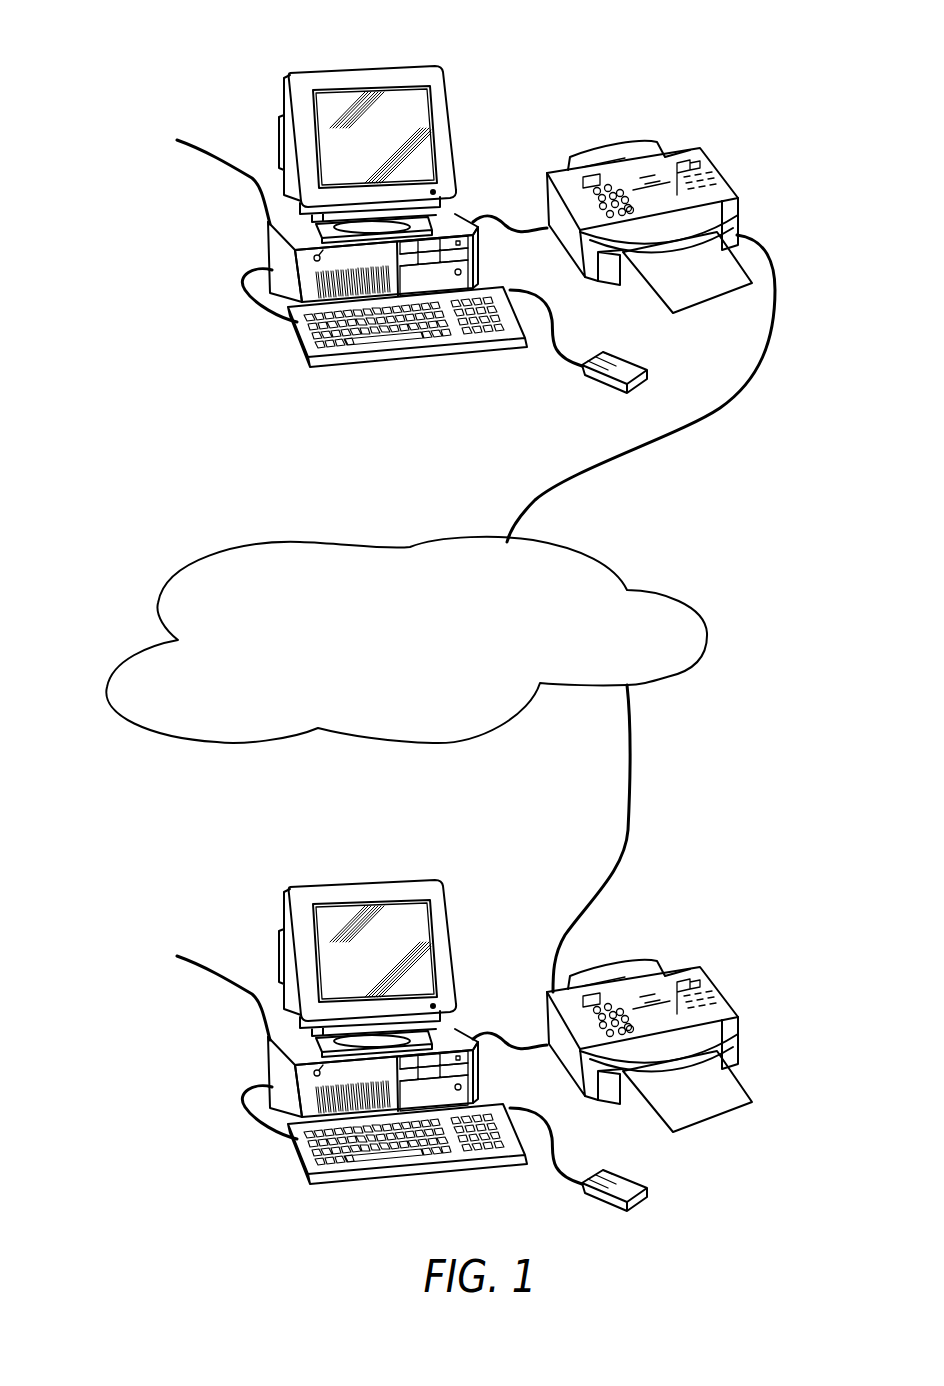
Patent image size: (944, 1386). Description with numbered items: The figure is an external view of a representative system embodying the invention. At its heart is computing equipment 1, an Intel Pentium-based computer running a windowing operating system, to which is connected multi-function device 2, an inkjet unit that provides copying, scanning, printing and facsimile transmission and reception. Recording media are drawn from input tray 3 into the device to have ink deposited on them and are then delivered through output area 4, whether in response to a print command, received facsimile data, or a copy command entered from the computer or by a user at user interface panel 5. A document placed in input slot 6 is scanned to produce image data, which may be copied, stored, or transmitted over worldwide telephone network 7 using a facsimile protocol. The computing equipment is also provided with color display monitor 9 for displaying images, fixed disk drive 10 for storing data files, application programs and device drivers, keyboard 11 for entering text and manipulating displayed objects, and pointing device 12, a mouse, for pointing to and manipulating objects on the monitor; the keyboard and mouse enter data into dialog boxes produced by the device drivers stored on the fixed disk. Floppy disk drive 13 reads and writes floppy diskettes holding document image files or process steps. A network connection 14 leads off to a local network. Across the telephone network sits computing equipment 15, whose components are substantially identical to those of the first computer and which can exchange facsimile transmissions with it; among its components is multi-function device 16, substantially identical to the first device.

The computing equipment 1 is at (515, 84).
The multi-function device 2 is at (663, 194).
The input tray 3 is at (593, 143).
The output area 4 is at (623, 272).
The user interface panel 5 is at (627, 190).
The input slot 6 is at (738, 205).
The worldwide telephone network 7 is at (650, 592).
The color display monitor 9 is at (372, 67).
The fixed disk drive 10 is at (401, 258).
The keyboard 11 is at (345, 347).
The pointing device 12 is at (632, 390).
The floppy disk drive 13 is at (467, 257).
The network connection cable 14 is at (207, 155).
The computing equipment 15 is at (510, 894).
The multi-function device 16 is at (708, 940).